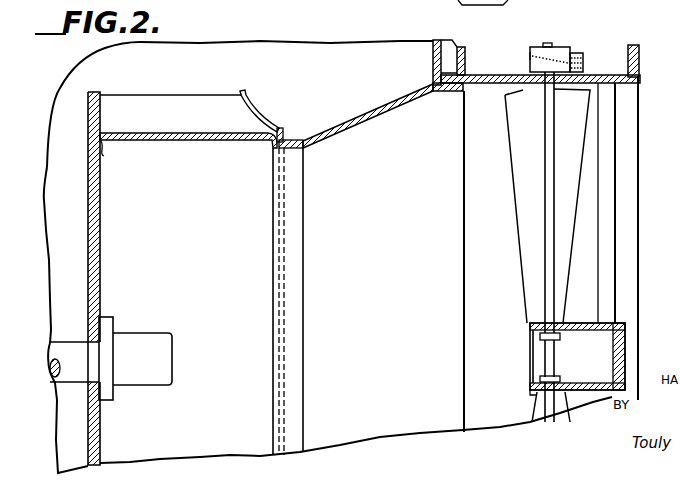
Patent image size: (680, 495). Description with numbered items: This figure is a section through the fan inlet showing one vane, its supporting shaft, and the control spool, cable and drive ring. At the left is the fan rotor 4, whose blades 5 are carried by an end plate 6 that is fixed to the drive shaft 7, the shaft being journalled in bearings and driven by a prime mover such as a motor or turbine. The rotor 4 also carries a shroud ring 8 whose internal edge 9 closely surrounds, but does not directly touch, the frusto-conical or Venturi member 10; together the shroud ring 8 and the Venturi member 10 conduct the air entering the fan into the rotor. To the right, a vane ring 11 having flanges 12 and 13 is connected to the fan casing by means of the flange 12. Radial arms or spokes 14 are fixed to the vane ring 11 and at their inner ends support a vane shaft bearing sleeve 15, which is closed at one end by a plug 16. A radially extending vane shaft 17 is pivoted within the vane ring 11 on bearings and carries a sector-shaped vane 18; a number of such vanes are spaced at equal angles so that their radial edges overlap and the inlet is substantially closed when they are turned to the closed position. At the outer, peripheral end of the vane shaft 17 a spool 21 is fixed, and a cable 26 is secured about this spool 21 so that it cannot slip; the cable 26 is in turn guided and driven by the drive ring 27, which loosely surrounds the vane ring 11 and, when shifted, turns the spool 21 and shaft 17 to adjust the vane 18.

The fan rotor 4 is at (185, 92).
The blades 5 is at (172, 141).
The end plate 6 is at (101, 268).
The drive shaft 7 is at (63, 343).
The shroud ring 8 is at (255, 111).
The internal edge 9 is at (283, 137).
The frusto-conical or Venturi member 10 is at (350, 133).
The vane ring 11 is at (633, 224).
The flange 12 is at (466, 62).
The flange 13 is at (641, 58).
The radial arms or spokes 14 is at (608, 169).
The vane shaft bearing sleeve 15 is at (530, 395).
The plug 16 is at (623, 341).
The vane shaft 17 is at (548, 222).
The sector-shaped vane 18 is at (528, 152).
The spool 21 is at (557, 46).
The cable 26 is at (530, 49).
The drive ring 27 is at (591, 52).